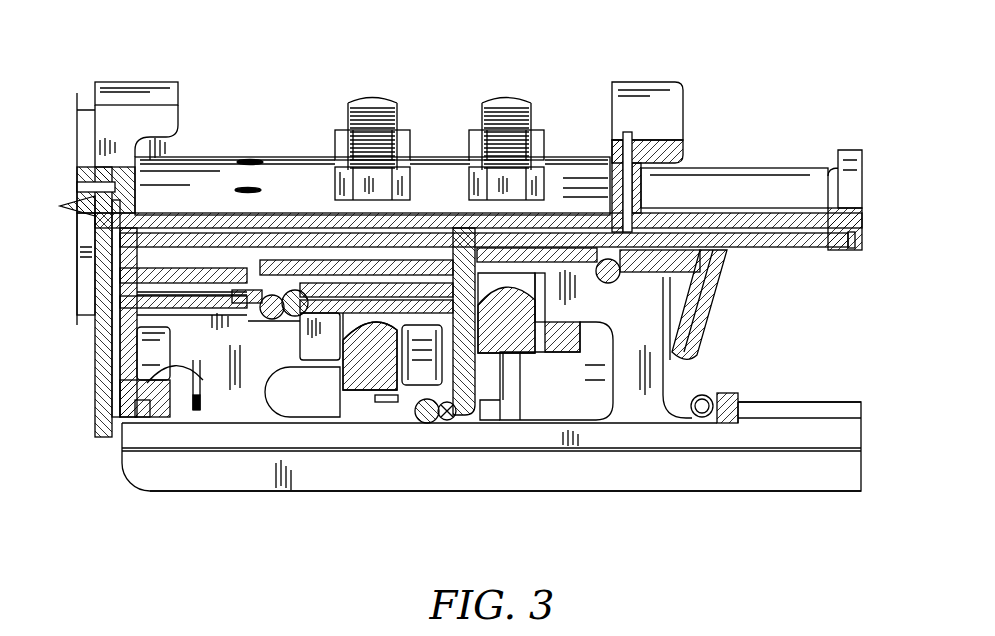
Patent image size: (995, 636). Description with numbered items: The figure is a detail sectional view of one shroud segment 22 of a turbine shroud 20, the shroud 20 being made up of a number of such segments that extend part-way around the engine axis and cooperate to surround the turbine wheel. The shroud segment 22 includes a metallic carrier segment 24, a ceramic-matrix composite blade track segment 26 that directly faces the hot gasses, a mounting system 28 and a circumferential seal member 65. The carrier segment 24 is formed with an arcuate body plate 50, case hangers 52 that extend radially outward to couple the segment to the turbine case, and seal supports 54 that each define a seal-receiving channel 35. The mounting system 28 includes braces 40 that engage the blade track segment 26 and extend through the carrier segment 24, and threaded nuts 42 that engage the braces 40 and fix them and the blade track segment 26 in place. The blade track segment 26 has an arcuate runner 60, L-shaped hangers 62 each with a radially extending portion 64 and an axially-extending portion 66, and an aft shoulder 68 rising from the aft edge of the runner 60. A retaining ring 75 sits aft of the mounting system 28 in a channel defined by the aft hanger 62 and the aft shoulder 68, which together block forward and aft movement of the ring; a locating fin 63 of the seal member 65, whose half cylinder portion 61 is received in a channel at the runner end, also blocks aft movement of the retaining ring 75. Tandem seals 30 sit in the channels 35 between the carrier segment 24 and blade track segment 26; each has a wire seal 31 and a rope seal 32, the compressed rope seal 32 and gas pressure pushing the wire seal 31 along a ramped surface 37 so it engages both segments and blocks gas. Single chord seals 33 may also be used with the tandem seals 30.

The turbine shroud 20 is at (735, 68).
The shroud segment 22 is at (782, 90).
The carrier segment 24 is at (790, 165).
The blade track segment 26 is at (707, 495).
The mounting system 28 is at (538, 106).
The tandem seal 30 is at (271, 293).
The wire seal 31 is at (288, 337).
The rope seal 32 is at (135, 410).
The single chord seal 33 is at (636, 290).
The seal-receiving channel 35 is at (294, 283).
The ramped surface 37 is at (250, 322).
The brace 40 is at (409, 317).
The threaded nut 42 is at (397, 183).
The body plate 50 is at (214, 158).
The case hanger 52 is at (140, 78).
The seal support 54 is at (281, 283).
The runner 60 is at (615, 495).
The half cylinder portion 61 is at (786, 440).
The hanger 62 is at (665, 297).
The locating fin 63 is at (730, 395).
The radially extending portion 64 is at (660, 382).
The circumferential seal member 65 is at (778, 412).
The axially-extending portion 66 is at (322, 316).
The aft shoulder 68 is at (845, 400).
The retaining ring 75 is at (699, 420).